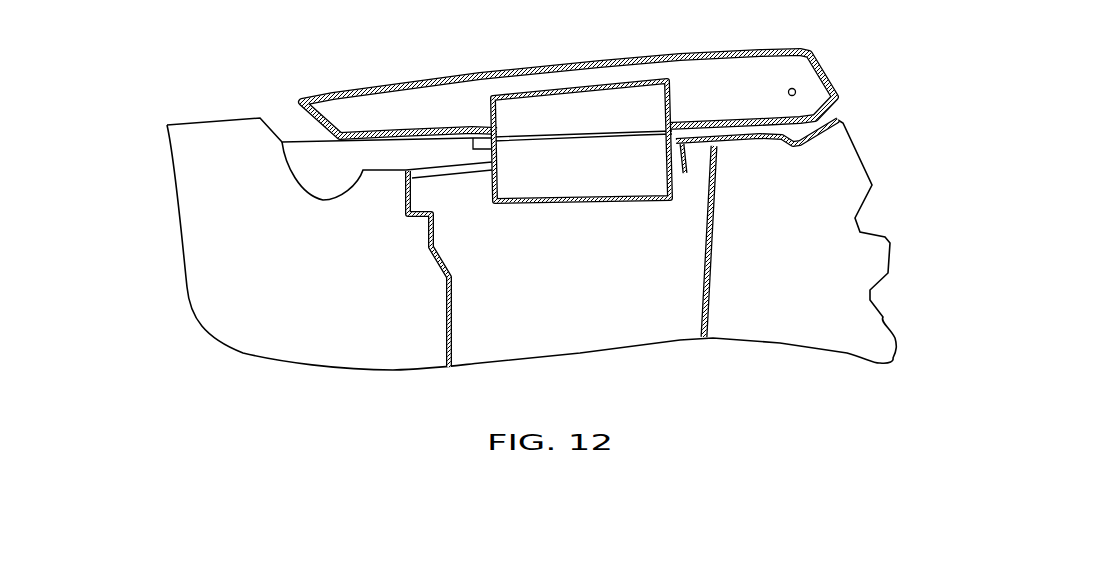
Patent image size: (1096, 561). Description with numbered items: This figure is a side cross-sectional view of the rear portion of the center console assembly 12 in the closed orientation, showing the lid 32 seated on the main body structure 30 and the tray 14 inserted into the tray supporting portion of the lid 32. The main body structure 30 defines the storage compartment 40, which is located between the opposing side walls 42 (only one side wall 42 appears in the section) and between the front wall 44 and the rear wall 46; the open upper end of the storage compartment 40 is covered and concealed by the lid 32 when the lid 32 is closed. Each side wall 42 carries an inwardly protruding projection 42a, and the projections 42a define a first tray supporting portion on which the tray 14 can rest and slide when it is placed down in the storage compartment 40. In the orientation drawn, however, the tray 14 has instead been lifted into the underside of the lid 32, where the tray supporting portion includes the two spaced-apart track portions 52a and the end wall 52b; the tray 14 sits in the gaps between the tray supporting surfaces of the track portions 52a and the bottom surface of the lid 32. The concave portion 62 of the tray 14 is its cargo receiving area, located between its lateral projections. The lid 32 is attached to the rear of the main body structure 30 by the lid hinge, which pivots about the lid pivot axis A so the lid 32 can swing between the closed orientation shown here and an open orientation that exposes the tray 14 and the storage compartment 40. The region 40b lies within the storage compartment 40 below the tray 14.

The sensor assembly 12 is at (564, 142).
The lid 32 is at (683, 53).
The lid pivot axis A is at (795, 90).
The track portions 52a is at (472, 151).
The end wall 52b is at (688, 130).
The concave portion 62 is at (567, 177).
The inwardly protruding projection 42a is at (452, 170).
The tray 14 is at (581, 174).
The front wall 44 is at (451, 313).
The rear wall 46 is at (707, 304).
The main body structure 30 is at (833, 261).
The side walls 42 is at (539, 263).
The mounting surface 40b is at (555, 312).
The storage compartment 40 is at (560, 263).